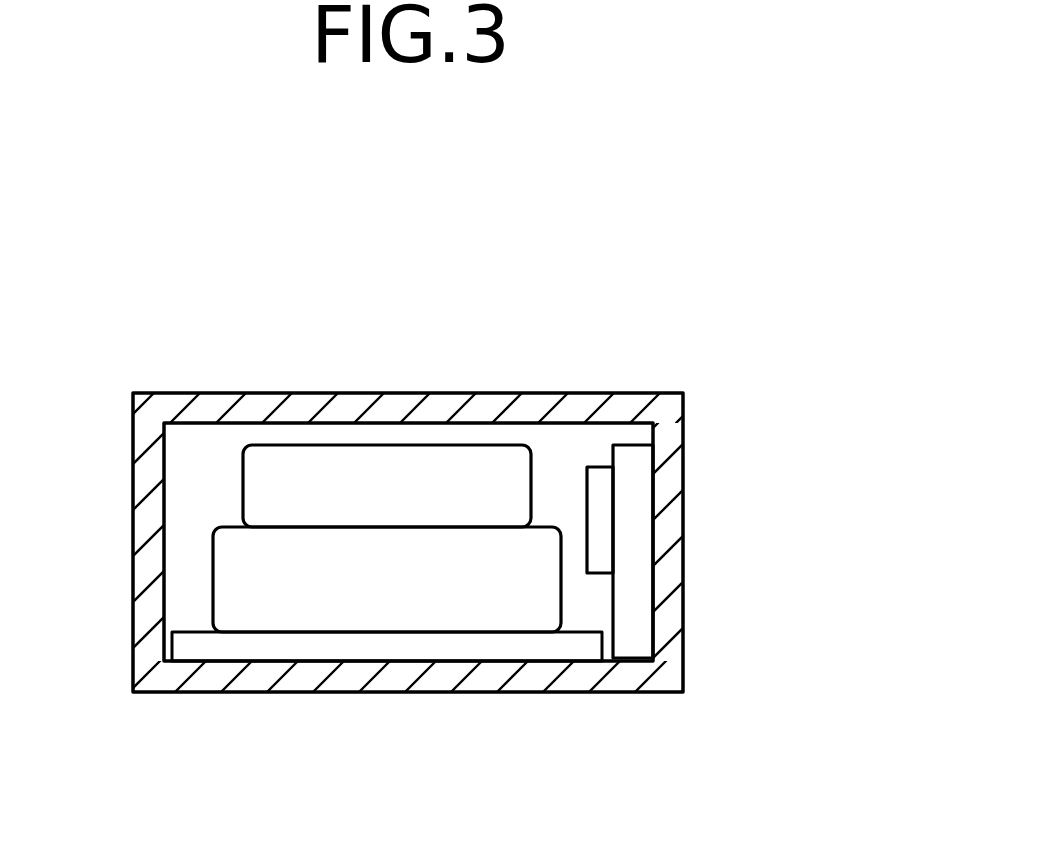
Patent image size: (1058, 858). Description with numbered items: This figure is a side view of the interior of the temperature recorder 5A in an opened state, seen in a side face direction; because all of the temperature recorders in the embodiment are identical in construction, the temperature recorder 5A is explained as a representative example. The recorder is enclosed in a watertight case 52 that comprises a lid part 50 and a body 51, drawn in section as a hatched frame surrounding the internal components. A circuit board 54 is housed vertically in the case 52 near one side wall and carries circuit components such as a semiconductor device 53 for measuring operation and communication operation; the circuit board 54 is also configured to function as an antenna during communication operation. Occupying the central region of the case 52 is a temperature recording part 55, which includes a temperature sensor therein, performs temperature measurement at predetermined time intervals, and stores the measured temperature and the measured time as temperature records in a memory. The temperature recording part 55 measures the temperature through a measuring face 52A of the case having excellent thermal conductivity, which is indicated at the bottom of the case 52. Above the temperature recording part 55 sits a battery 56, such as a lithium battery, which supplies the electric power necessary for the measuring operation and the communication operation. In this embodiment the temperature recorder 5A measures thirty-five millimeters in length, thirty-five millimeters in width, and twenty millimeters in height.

The temperature recorder 5A is at (477, 530).
The lid part 50 is at (693, 400).
The body 51 is at (672, 483).
The watertight case 52 is at (477, 583).
The measuring face 52A is at (432, 673).
The semiconductor device 53 is at (597, 517).
The circuit board 54 is at (637, 620).
The temperature recording part 55 is at (213, 585).
The battery 56 is at (272, 502).